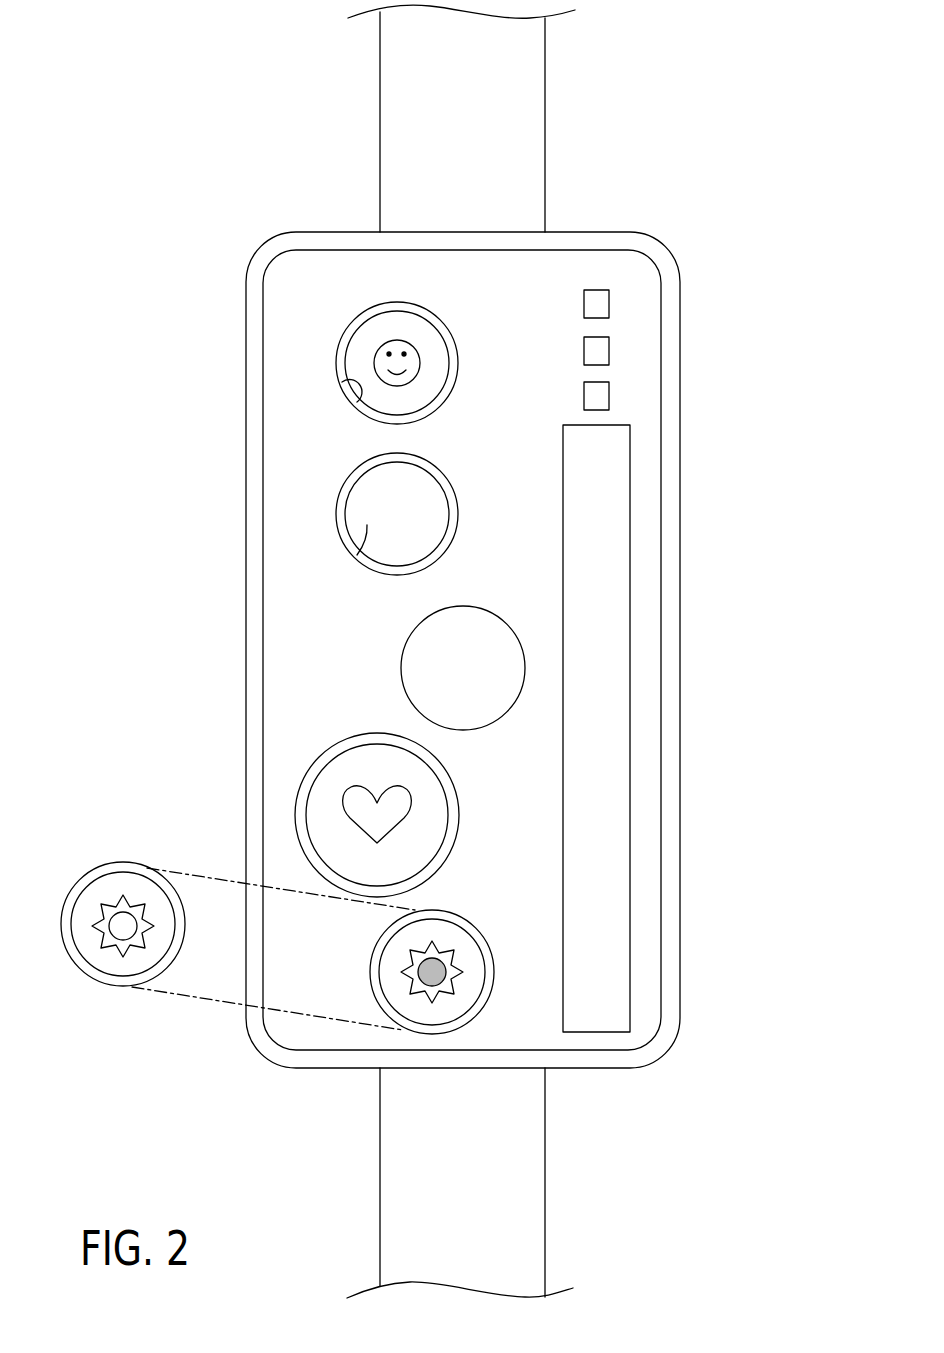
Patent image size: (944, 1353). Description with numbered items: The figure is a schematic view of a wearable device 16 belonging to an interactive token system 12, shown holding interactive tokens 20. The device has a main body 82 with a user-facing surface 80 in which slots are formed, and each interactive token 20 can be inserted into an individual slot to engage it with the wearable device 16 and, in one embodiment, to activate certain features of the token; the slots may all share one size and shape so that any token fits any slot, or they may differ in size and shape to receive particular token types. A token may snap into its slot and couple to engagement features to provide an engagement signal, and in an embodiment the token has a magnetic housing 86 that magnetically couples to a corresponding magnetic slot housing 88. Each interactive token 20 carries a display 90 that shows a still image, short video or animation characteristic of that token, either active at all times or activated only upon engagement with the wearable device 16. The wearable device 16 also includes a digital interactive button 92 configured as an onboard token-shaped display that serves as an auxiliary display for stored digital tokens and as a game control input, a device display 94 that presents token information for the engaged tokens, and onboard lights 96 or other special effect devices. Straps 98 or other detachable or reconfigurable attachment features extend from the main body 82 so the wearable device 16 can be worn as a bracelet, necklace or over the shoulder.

The interactive token system 12 is at (237, 142).
The wearable device 16 is at (213, 253).
The interactive token 20 is at (430, 347).
The user-facing surface 80 is at (320, 278).
The main body 82 is at (680, 385).
The magnetic housing 86 is at (120, 863).
The magnetic slot housing 88 is at (440, 470).
The display 90 is at (388, 813).
The digital interactive button 92 is at (420, 628).
The device display 94 is at (580, 425).
The onboard lights 96 is at (584, 300).
The straps 98 is at (545, 125).